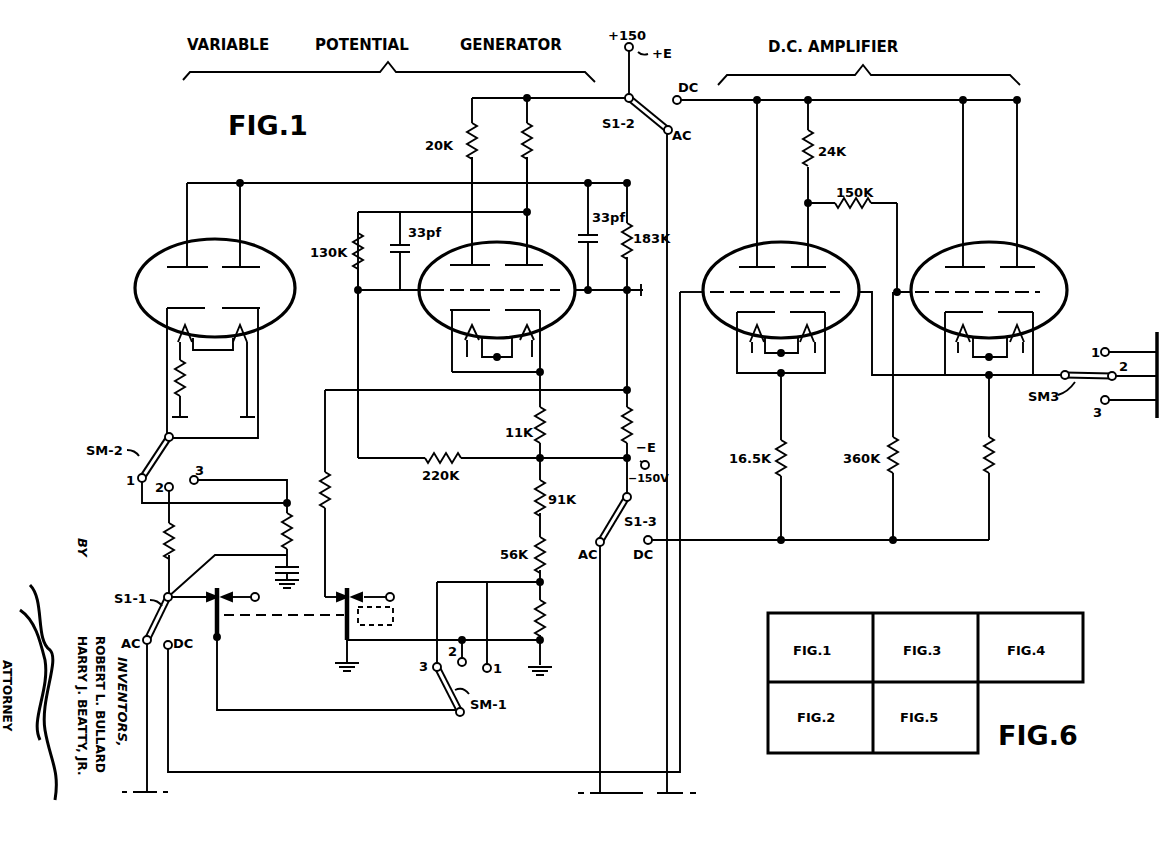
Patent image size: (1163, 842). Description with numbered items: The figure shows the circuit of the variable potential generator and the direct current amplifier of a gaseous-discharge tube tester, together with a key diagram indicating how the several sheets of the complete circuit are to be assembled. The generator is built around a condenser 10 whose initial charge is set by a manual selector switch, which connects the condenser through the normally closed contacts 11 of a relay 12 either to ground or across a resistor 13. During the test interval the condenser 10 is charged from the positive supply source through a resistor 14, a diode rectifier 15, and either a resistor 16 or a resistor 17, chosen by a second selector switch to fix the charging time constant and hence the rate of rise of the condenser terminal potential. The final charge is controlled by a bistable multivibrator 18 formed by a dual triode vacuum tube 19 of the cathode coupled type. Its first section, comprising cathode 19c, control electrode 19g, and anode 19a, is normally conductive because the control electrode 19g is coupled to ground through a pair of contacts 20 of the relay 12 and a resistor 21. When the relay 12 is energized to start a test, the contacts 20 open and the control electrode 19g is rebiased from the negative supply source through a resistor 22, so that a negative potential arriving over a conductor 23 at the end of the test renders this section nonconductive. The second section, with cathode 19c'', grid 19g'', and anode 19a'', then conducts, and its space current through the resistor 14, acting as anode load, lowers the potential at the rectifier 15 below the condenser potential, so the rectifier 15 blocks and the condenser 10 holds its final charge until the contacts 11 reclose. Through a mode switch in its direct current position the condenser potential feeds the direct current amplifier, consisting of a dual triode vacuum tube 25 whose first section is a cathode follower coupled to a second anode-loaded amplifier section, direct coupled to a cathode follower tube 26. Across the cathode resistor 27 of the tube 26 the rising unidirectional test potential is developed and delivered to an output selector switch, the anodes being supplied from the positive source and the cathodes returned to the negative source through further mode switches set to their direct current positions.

The condenser 10 is at (292, 572).
The normally closed contacts 11 is at (215, 603).
The relay 12 is at (394, 617).
The resistor 13 is at (537, 619).
The resistor 14 is at (533, 181).
The diode rectifier 15 is at (158, 252).
The resistor 16 is at (284, 527).
The resistor 17 is at (166, 540).
The bistable multivibrator 18 is at (356, 355).
The vacuum tube 19 is at (484, 264).
The anode 19a is at (529, 211).
The anode 19a'' is at (481, 211).
The control electrode 19g is at (507, 264).
The grid 19g'' is at (445, 281).
The cathode 19c is at (548, 341).
The cathode 19c'' is at (455, 341).
The contacts 20 is at (345, 600).
The resistor 21 is at (323, 478).
The resistor 22 is at (631, 436).
The conductor 23 is at (643, 292).
The vacuum tube 25 is at (845, 263).
The tube 26 is at (939, 256).
The cathode resistor 27 is at (986, 455).